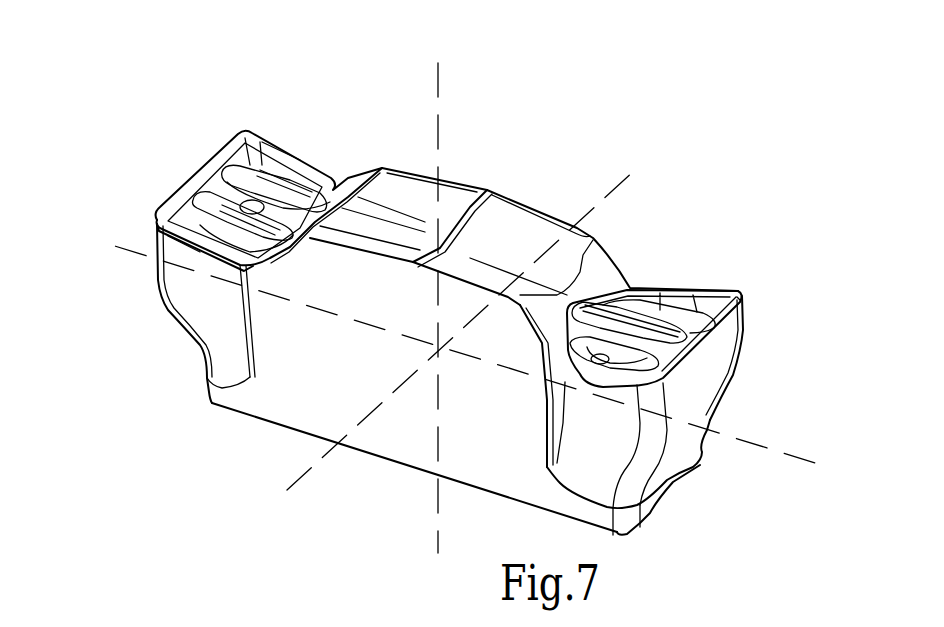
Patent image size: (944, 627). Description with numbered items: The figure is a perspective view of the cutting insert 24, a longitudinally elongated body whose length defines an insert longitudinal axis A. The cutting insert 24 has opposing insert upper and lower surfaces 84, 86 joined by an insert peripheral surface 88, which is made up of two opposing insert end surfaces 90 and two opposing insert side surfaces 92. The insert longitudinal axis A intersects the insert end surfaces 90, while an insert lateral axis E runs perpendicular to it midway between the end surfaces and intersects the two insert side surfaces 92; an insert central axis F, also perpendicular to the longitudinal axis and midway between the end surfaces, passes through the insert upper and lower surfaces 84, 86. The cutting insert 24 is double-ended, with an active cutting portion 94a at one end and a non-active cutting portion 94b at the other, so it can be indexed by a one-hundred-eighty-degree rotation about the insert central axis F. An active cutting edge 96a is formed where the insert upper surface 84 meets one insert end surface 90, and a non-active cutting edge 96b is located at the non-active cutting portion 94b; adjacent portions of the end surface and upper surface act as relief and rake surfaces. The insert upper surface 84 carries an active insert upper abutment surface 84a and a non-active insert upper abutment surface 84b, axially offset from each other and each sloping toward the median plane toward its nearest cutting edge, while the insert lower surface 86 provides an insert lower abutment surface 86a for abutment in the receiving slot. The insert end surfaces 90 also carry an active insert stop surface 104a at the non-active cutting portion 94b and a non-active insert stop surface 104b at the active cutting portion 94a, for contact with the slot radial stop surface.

The cutting insert 24 is at (440, 278).
The insert upper surface 84 is at (403, 197).
The insert upper abutment surface 84a is at (425, 195).
The non-active insert upper abutment surface 84b is at (497, 230).
The insert lower surface 86 is at (430, 469).
The insert lower abutment surface 86a is at (373, 457).
The insert peripheral surface 88 is at (146, 313).
The insert end surface 90 is at (147, 200).
The insert side surface 92 is at (338, 386).
The active cutting portion 94a is at (682, 359).
The non-active cutting portion 94b is at (454, 221).
The active cutting edge 96a is at (717, 320).
The non-active cutting edge 96b is at (210, 153).
The active insert stop surface 104a is at (122, 263).
The non-active insert stop surface 104b is at (710, 390).
The insert longitudinal axis A is at (770, 456).
The insert lateral axis E is at (622, 178).
The insert central axis F is at (438, 88).